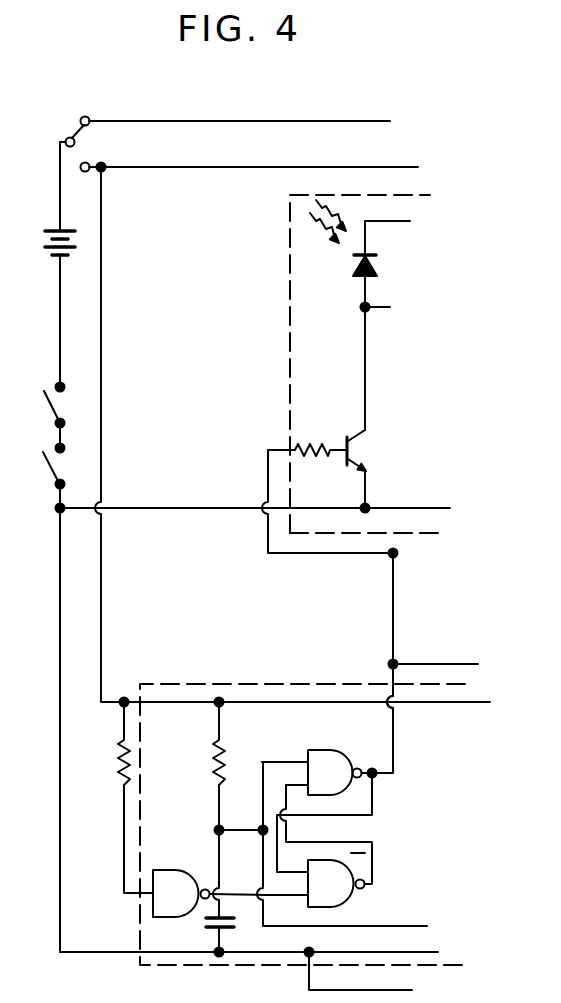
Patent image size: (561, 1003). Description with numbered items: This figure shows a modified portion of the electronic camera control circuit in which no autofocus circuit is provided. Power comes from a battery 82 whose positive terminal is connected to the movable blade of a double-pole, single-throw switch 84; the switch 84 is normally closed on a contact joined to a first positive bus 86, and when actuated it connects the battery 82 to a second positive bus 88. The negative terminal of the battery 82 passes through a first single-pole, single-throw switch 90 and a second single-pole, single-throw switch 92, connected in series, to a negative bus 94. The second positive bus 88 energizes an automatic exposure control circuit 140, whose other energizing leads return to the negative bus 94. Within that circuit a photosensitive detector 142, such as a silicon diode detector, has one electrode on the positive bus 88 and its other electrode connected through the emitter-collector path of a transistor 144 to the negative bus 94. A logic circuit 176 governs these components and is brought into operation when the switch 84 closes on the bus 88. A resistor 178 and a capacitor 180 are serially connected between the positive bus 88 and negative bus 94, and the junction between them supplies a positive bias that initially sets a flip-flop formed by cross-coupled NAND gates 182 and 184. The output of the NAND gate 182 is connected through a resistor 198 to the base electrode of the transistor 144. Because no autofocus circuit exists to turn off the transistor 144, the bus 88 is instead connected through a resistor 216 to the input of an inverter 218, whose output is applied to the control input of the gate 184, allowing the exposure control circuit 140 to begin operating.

The battery 82 is at (55, 223).
The double-pole, single-throw switch 84 is at (69, 133).
The first positive bus 86 is at (111, 128).
The second positive bus 88 is at (111, 174).
The first single-pole, single-throw switch 90 is at (48, 410).
The second single-pole, single-throw switch 92 is at (48, 471).
The negative bus 94 is at (52, 510).
The automatic exposure control circuit 140 is at (316, 195).
The photosensitive detector 142 is at (372, 257).
The transistor 144 is at (351, 450).
The logic circuit 176 is at (226, 689).
The resistor 178 is at (211, 766).
The capacitor 180 is at (210, 928).
The first NAND gate 182 is at (314, 751).
The NAND gate 184 is at (347, 903).
The resistor 198 is at (303, 446).
The resistor 216 is at (113, 763).
The inverter 218 is at (185, 872).